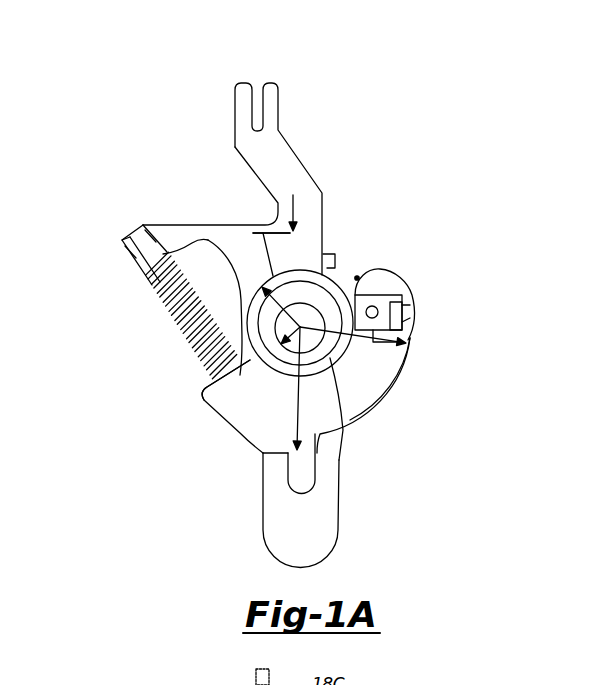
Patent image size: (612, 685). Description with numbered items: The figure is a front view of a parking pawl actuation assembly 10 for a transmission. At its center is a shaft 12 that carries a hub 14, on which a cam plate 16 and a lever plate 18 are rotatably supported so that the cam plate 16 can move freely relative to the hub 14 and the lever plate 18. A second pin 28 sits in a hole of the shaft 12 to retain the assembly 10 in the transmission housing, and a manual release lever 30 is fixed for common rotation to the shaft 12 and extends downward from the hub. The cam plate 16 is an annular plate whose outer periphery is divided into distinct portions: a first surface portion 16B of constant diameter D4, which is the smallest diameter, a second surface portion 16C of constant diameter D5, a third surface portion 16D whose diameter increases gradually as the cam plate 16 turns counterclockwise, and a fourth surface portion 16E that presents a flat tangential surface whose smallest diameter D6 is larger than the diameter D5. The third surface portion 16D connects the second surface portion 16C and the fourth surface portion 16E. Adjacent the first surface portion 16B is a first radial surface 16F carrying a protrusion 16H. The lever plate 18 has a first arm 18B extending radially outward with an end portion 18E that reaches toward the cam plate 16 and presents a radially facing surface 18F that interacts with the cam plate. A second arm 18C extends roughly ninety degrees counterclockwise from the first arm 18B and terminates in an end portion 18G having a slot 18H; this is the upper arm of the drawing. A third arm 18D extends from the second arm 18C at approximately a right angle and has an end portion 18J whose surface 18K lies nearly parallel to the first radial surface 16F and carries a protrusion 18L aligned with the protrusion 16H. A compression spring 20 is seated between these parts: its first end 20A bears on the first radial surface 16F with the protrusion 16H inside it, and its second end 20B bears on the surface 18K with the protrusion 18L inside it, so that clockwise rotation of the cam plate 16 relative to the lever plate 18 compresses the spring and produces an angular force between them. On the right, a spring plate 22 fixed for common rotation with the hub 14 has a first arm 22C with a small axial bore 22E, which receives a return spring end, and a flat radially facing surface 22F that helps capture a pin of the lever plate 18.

The parking pawl actuation assembly 10 is at (388, 80).
The shaft 12 is at (312, 300).
The hub 14 is at (333, 360).
The cam plate 16 is at (237, 440).
The first surface portion 16B is at (262, 231).
The second surface portion 16C is at (397, 383).
The third surface portion 16D is at (342, 460).
The fourth surface portion 16E is at (288, 455).
The first radial surface 16F is at (198, 388).
The protrusion 16H is at (203, 385).
The lever plate 18 is at (282, 213).
The first arm 18B is at (410, 290).
The second arm 18C is at (280, 100).
The third arm 18D is at (178, 225).
The end portion 18E is at (415, 318).
The radially facing surface 18F is at (410, 349).
The end portion 18G is at (412, 326).
The slot 18H is at (260, 100).
The end portion 18J is at (120, 241).
The surface 18K is at (126, 276).
The protrusion 18L is at (142, 284).
The compression spring 20 is at (184, 335).
The first end 20A is at (237, 350).
The second end 20B is at (193, 242).
The spring plate 22 is at (400, 280).
The first arm 22C is at (373, 269).
The axial bore 22E is at (357, 276).
The radially facing surface 22F is at (412, 292).
The second pin 28 is at (330, 254).
The manual release lever 30 is at (340, 515).
The diameter D4 is at (281, 349).
The diameter D5 is at (353, 347).
The smallest diameter D6 is at (308, 388).